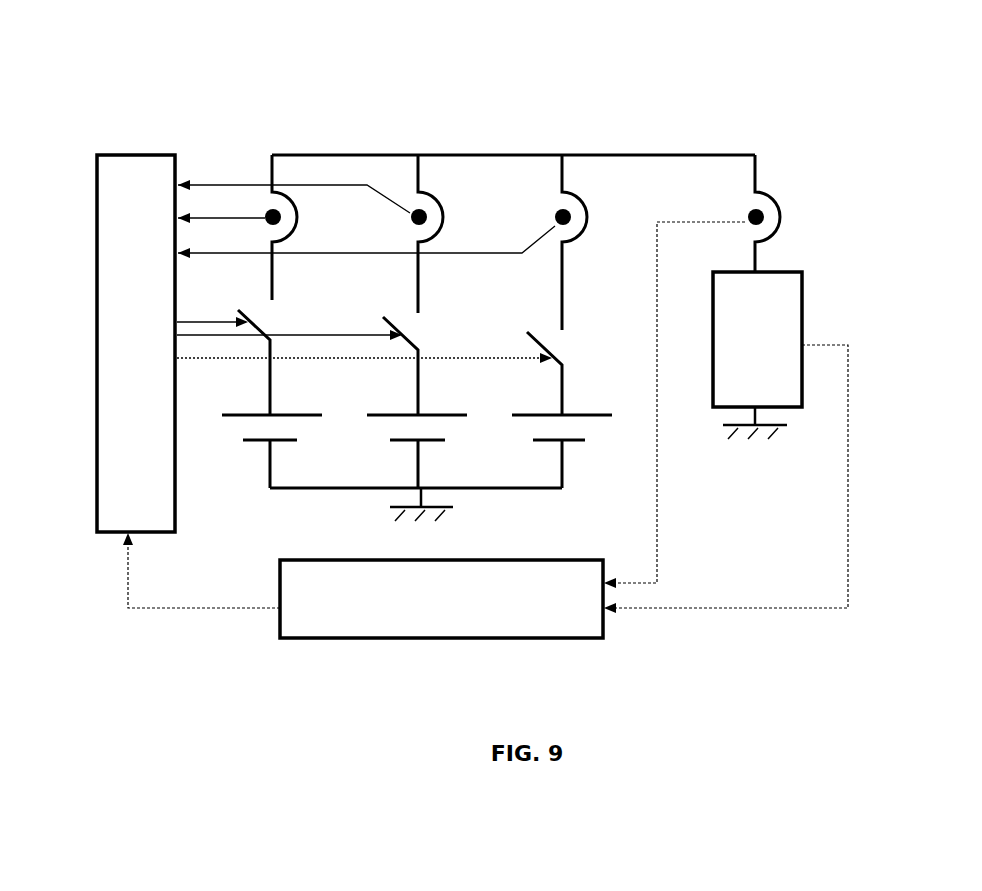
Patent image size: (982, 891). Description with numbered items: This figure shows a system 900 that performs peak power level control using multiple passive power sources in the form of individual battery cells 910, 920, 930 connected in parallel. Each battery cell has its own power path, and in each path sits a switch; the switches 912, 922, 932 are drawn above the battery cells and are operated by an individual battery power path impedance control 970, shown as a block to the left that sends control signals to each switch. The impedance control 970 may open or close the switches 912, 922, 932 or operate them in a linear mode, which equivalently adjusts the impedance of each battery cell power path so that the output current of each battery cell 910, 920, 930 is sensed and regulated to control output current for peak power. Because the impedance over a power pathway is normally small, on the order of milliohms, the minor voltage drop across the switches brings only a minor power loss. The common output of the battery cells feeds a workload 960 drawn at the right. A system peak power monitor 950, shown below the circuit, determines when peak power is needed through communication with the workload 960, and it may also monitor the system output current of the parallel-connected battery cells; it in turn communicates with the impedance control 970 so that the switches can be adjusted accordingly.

The system 900 is at (580, 112).
The battery cell 910 is at (242, 418).
The switch 912 is at (274, 300).
The battery cell 920 is at (400, 420).
The switch 922 is at (420, 293).
The battery cell 930 is at (533, 420).
The switch 932 is at (565, 290).
The system peak power monitor 950 is at (477, 640).
The workload 960 is at (803, 315).
The individual battery power path impedance control 970 is at (98, 165).